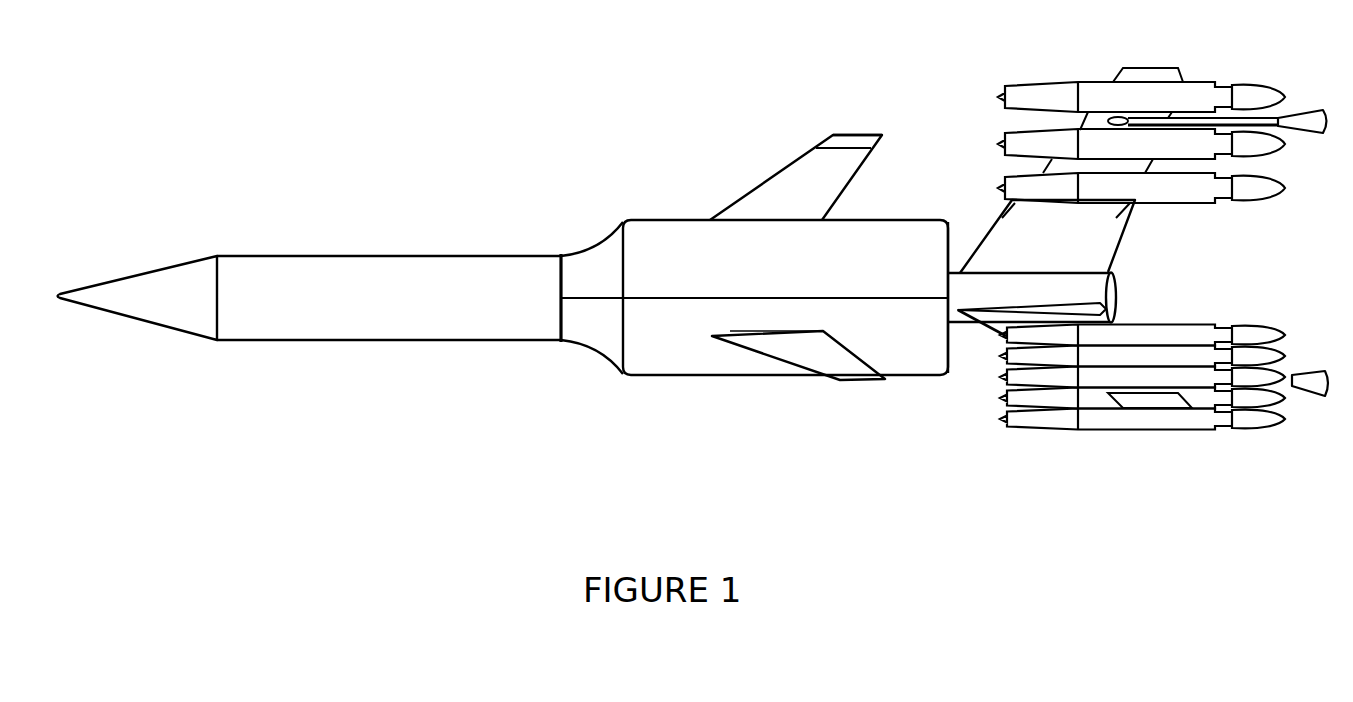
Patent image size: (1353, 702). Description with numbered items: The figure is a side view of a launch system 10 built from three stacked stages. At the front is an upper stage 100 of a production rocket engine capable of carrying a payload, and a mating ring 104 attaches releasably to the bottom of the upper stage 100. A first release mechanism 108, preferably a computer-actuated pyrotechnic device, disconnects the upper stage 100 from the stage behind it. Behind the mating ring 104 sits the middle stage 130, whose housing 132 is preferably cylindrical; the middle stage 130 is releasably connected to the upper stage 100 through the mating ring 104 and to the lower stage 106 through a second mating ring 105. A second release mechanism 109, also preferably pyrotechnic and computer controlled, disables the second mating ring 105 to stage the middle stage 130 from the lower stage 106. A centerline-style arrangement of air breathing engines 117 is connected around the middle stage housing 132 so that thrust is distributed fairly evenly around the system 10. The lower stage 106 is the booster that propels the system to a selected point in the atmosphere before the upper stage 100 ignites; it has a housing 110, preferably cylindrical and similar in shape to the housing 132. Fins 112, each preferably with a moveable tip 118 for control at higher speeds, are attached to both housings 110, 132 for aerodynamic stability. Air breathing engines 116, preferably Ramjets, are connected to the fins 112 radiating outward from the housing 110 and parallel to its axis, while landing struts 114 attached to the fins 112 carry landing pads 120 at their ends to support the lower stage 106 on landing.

The launch system 10 is at (347, 477).
The upper stage 100 is at (336, 254).
The mating ring 104 is at (561, 254).
The second mating ring 105 is at (948, 322).
The lower stage 106 is at (1072, 283).
The first release mechanism 108 is at (561, 308).
The second release mechanism 109 is at (942, 309).
The housing 110 is at (989, 265).
The fins 112 is at (807, 171).
The landing struts 114 is at (1302, 131).
The air breathing engines 116 is at (999, 134).
The air breathing engines 117 is at (661, 306).
The moveable tip 118 is at (844, 131).
The landing pads 120 is at (1321, 109).
The middle stage 130 is at (676, 378).
The housing 132 is at (699, 243).